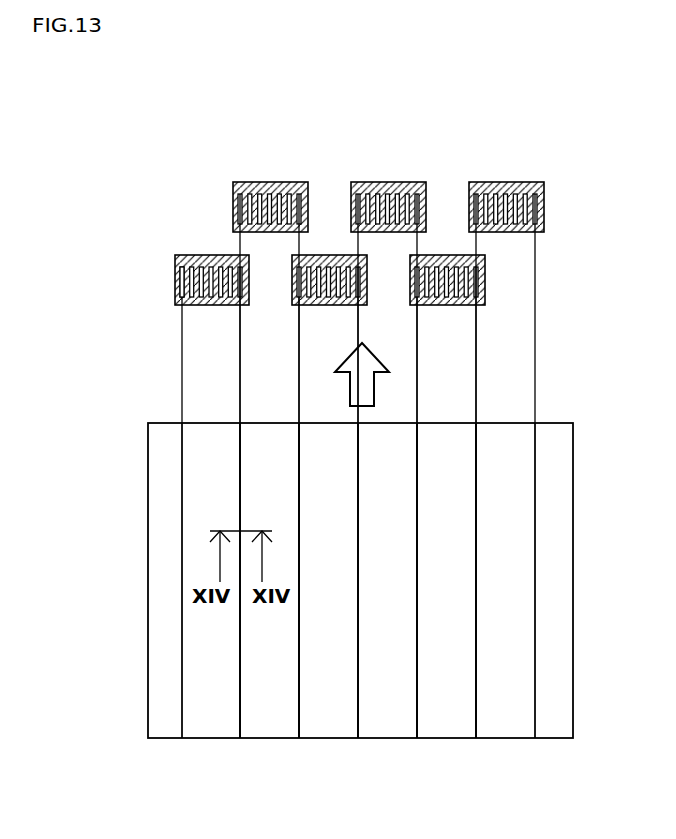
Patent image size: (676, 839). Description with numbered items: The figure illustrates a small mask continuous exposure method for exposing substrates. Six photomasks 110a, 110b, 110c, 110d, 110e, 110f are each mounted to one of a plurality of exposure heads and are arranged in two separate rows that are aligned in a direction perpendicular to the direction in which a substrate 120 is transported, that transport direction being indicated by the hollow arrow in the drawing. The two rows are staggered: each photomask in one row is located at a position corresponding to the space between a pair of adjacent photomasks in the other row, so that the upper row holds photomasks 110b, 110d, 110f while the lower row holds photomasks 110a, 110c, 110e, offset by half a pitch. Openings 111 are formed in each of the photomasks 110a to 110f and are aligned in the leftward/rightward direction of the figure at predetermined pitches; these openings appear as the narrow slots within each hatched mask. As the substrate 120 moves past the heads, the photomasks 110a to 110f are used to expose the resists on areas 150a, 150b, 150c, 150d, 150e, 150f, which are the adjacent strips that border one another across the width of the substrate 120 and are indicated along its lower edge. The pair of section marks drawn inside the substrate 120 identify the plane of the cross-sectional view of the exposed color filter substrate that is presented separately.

The photomask 110a is at (175, 255).
The photomask 110b is at (233, 182).
The photomask 110c is at (291, 305).
The photomask 110d is at (351, 182).
The photomask 110e is at (409, 305).
The photomask 110f is at (469, 182).
The openings 111 is at (182, 292).
The substrate 120 is at (148, 483).
The area 150a is at (211, 727).
The area 150b is at (270, 727).
The area 150c is at (329, 727).
The area 150d is at (388, 727).
The area 150e is at (447, 727).
The area 150f is at (506, 727).